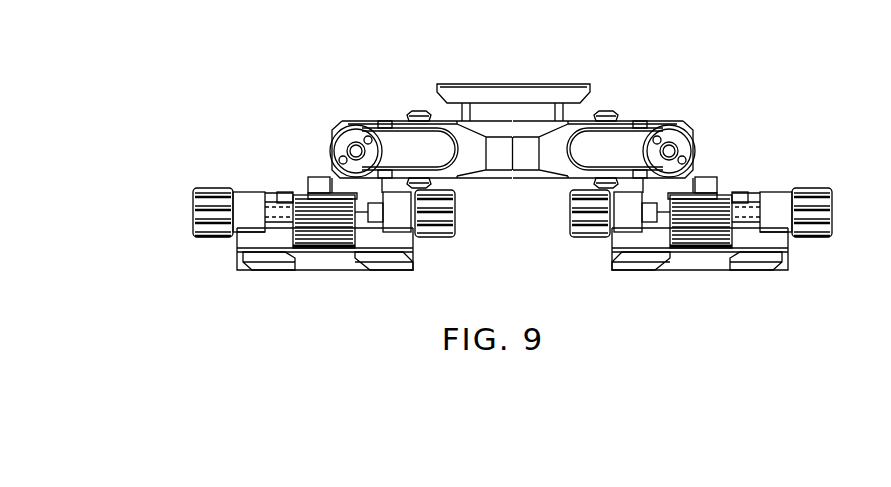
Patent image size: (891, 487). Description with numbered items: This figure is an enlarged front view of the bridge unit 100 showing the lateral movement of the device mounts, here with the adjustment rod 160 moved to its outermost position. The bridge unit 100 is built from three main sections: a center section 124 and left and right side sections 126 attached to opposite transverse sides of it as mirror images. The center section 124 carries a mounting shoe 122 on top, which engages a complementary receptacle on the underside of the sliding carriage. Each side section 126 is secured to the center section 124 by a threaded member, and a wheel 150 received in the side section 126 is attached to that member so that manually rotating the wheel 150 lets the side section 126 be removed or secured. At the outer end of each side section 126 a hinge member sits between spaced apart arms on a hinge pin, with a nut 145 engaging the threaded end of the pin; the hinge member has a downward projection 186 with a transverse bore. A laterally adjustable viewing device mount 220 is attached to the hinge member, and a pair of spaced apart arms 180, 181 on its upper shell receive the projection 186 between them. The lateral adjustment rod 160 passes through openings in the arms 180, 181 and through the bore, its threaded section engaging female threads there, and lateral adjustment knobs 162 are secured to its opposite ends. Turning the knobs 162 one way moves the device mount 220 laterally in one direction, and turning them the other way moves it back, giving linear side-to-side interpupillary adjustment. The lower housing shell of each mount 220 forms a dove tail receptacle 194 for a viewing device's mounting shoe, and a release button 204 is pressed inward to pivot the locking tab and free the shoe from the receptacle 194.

The bridge unit 100 is at (231, 81).
The mounting shoe 122 is at (548, 93).
The center section 124 is at (480, 110).
The side section 126 is at (622, 153).
The nut 145 is at (347, 125).
The wheel 150 is at (416, 118).
The lateral adjustment rod 160 is at (280, 203).
The lateral adjustment knob 162 is at (205, 190).
The arm 180 is at (247, 205).
The arm 181 is at (403, 217).
The downward projection 186 is at (374, 212).
The dove tail receptacle 194 is at (323, 253).
The release button 204 is at (330, 225).
The viewing device mount 220 is at (232, 238).